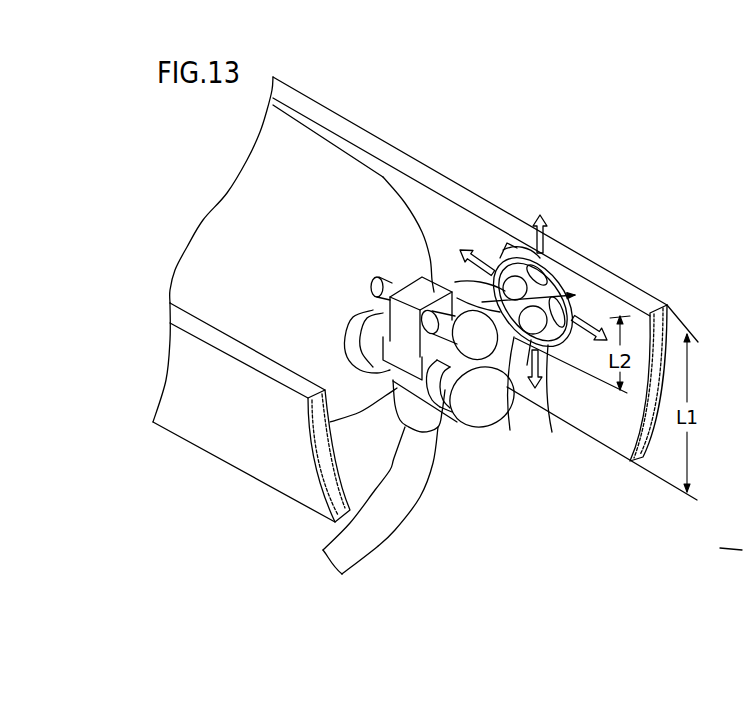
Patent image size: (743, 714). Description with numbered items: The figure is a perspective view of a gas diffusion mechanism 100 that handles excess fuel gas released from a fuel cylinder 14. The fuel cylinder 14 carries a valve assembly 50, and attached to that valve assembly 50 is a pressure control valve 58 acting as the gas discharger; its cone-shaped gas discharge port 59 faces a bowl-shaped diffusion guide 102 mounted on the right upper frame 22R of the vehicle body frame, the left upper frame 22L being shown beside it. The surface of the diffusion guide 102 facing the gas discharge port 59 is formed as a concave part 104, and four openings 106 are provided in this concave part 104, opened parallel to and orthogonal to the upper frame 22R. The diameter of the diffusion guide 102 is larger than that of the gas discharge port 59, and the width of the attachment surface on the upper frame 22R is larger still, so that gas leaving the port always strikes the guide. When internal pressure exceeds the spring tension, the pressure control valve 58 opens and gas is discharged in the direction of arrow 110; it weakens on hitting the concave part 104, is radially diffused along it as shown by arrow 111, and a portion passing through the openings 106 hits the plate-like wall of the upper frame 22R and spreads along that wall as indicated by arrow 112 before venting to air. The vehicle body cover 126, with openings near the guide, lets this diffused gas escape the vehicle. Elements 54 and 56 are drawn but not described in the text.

The fuel cylinder 14 is at (330, 158).
The upper frame 22L is at (230, 452).
The upper frame 22R is at (593, 430).
The valve assembly 50 is at (447, 457).
The motor 54 is at (478, 422).
The connector 56 is at (408, 397).
The pressure control valve 58 is at (430, 277).
The gas discharge port 59 is at (460, 280).
The gas diffusion mechanism 100 is at (455, 160).
The diffusion guide 102 is at (540, 258).
The concave part 104 is at (567, 278).
The openings 106 is at (501, 259).
The arrow 110 is at (497, 428).
The arrow 111 is at (578, 295).
The arrow 112 is at (547, 237).
The vehicle body cover 126 is at (713, 549).